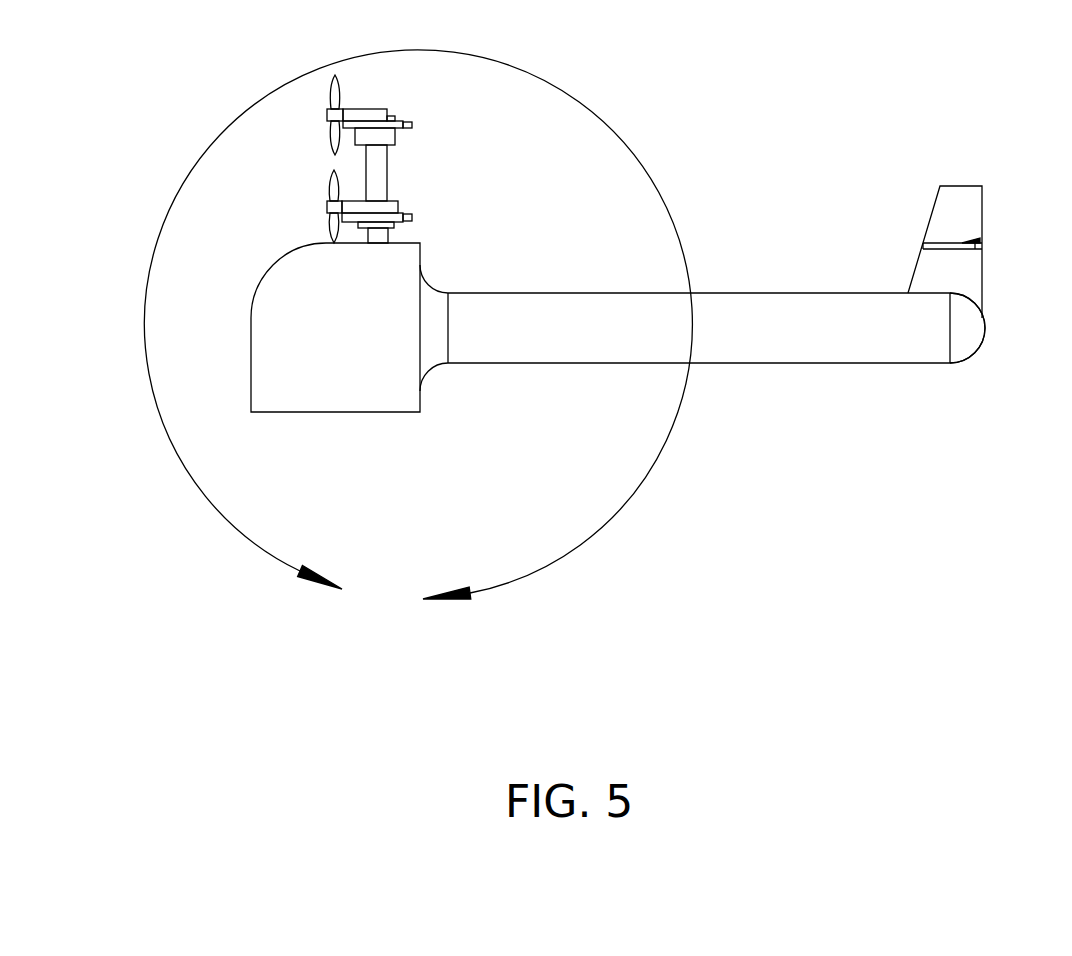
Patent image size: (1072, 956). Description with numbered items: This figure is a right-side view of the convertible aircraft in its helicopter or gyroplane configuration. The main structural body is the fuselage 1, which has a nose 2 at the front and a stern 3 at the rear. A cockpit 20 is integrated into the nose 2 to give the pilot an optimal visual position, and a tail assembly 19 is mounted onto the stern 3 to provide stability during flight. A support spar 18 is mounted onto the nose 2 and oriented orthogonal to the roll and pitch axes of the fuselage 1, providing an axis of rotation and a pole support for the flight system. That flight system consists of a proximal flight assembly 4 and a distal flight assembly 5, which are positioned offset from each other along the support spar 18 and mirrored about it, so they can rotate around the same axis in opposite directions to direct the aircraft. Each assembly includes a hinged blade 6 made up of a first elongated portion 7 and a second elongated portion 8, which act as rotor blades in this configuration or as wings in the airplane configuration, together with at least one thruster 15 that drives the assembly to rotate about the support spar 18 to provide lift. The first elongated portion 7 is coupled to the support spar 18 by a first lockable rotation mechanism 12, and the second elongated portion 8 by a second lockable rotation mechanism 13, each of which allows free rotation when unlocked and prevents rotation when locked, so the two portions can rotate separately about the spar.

The fuselage 1 is at (627, 297).
The nose 2 is at (441, 384).
The stern 3 is at (997, 332).
The proximal flight assembly 4 is at (253, 213).
The distal flight assembly 5 is at (480, 131).
The hinged blade 6 is at (418, 335).
The first elongated portion 7 is at (412, 222).
The second elongated portion 8 is at (404, 123).
The first lockable rotation mechanism 12 is at (397, 132).
The second lockable rotation mechanism 13 is at (392, 108).
The thruster 15 is at (327, 117).
The support spar 18 is at (388, 160).
The tail assembly 19 is at (975, 277).
The cockpit 20 is at (265, 294).